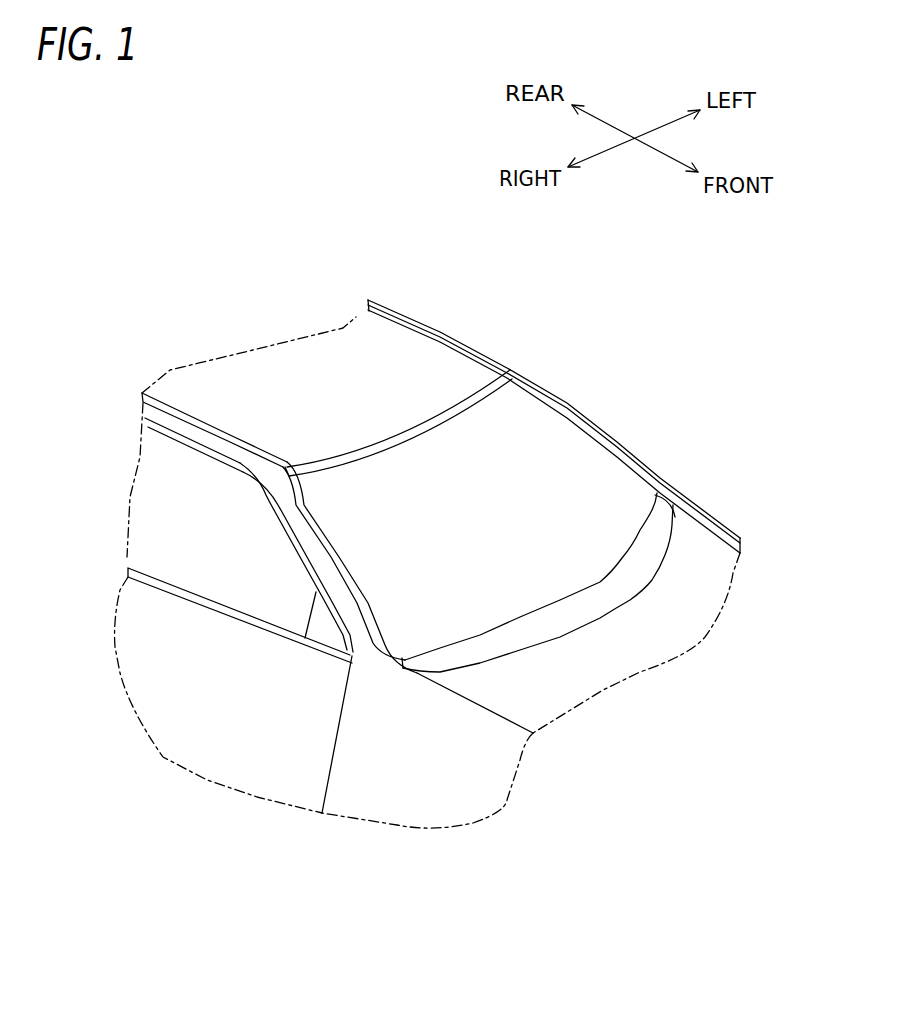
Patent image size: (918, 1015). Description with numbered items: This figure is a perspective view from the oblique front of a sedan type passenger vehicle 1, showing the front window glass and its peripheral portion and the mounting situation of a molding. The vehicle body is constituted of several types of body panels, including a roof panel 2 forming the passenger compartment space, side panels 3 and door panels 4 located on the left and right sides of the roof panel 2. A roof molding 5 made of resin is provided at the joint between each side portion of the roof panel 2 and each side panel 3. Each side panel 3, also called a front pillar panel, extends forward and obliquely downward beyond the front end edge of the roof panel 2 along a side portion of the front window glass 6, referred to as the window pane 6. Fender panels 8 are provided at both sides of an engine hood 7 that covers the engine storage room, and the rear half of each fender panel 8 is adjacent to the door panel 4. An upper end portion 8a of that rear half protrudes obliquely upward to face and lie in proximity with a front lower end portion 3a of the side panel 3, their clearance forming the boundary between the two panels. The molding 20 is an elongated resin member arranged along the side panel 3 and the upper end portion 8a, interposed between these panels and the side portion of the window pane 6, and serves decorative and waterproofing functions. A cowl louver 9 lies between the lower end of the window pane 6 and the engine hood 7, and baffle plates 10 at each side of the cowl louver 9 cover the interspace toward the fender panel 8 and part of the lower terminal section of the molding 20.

The passenger vehicle 1 is at (470, 317).
The roof panel 2 is at (292, 358).
The side panel 3 is at (547, 388).
The front lower end portion of the side panel 3a is at (342, 606).
The door panel 4 is at (197, 703).
The roof molding 5 is at (188, 410).
The front window glass 6 is at (437, 470).
The engine hood 7 is at (683, 632).
The fender panel 8 is at (715, 523).
The upper end portion of the fender panel rear half portion 8a is at (360, 638).
The cowl louver 9 is at (560, 628).
The baffle plate 10 is at (655, 491).
The molding 20 is at (573, 420).